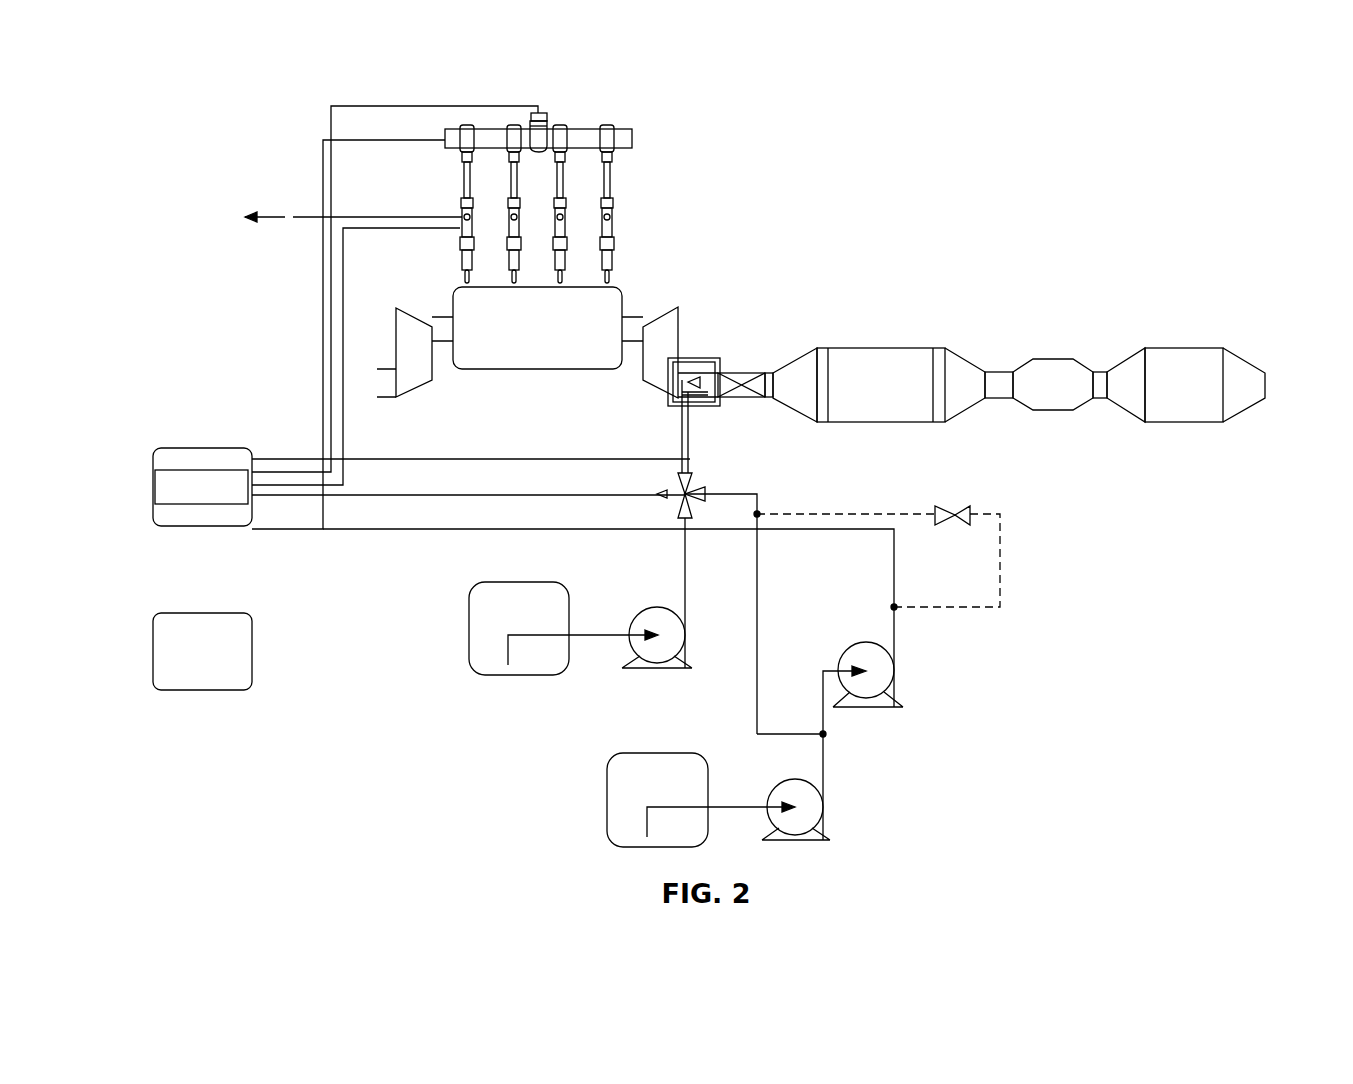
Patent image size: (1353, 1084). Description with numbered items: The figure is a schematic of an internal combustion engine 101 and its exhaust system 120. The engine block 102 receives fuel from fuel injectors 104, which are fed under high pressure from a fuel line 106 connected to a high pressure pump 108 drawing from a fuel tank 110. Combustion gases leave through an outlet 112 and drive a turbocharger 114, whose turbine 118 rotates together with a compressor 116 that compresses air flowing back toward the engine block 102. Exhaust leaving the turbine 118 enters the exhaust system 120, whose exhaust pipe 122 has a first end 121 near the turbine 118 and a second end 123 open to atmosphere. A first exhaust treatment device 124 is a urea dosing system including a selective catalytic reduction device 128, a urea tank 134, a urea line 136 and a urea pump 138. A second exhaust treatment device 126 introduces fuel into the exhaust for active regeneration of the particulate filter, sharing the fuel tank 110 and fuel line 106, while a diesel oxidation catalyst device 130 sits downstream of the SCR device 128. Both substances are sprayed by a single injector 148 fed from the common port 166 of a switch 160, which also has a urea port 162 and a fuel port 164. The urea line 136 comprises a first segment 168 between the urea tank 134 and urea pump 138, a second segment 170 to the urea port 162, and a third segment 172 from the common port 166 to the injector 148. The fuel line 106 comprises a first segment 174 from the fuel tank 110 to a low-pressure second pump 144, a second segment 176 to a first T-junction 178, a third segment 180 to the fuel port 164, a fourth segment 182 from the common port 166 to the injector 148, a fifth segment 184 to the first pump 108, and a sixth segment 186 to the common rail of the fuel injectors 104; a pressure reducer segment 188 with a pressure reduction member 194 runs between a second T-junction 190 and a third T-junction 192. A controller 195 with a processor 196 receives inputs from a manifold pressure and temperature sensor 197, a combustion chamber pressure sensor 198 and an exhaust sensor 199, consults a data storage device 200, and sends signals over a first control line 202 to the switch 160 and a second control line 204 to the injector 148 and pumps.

The internal combustion engine 101 is at (682, 176).
The engine block 102 is at (537, 328).
The fuel injectors 104 is at (618, 216).
The fuel line 106 is at (842, 757).
The high pressure pump 108 is at (866, 643).
The fuel tank 110 is at (636, 753).
The outlet 112 is at (634, 316).
The turbocharger 114 is at (450, 386).
The compressor 116 is at (412, 398).
The turbine 118 is at (684, 310).
The exhaust system 120 is at (1003, 302).
The first end 121 is at (716, 360).
The exhaust pipe 122 is at (770, 372).
The second end 123 is at (1262, 370).
The first exhaust treatment device 124 is at (1005, 350).
The second exhaust treatment device 126 is at (1207, 332).
The selective catalytic reduction device 128 is at (900, 348).
The diesel oxidation catalyst device 130 is at (1165, 348).
The urea tank 134 is at (490, 582).
The urea line 136 is at (680, 570).
The urea pump 138 is at (658, 607).
The second pump 144 is at (791, 780).
The injector 148 is at (690, 368).
The switch 160 is at (700, 480).
The urea port 162 is at (690, 510).
The fuel port 164 is at (708, 494).
The common port 166 is at (678, 488).
The first segment 168 is at (600, 637).
The second segment 170 is at (687, 598).
The third segment 172 is at (680, 425).
The first segment 174 is at (737, 808).
The second segment 176 is at (825, 770).
The first T-junction 178 is at (826, 734).
The third segment 180 is at (760, 585).
The fourth segment 182 is at (690, 455).
The fifth segment 184 is at (822, 690).
The sixth segment 186 is at (893, 572).
The pressure reducer segment 188 is at (1002, 545).
The second T-junction 190 is at (896, 605).
The third T-junction 192 is at (759, 512).
The pressure reduction member 194 is at (950, 510).
The controller 195 is at (172, 447).
The processor 196 is at (175, 506).
The pressure and temperature sensor 197 is at (548, 122).
The sensor 198 is at (460, 232).
The sensor 199 is at (737, 405).
The data storage device 200 is at (178, 613).
The first control line 202 is at (488, 497).
The second control line 204 is at (530, 459).